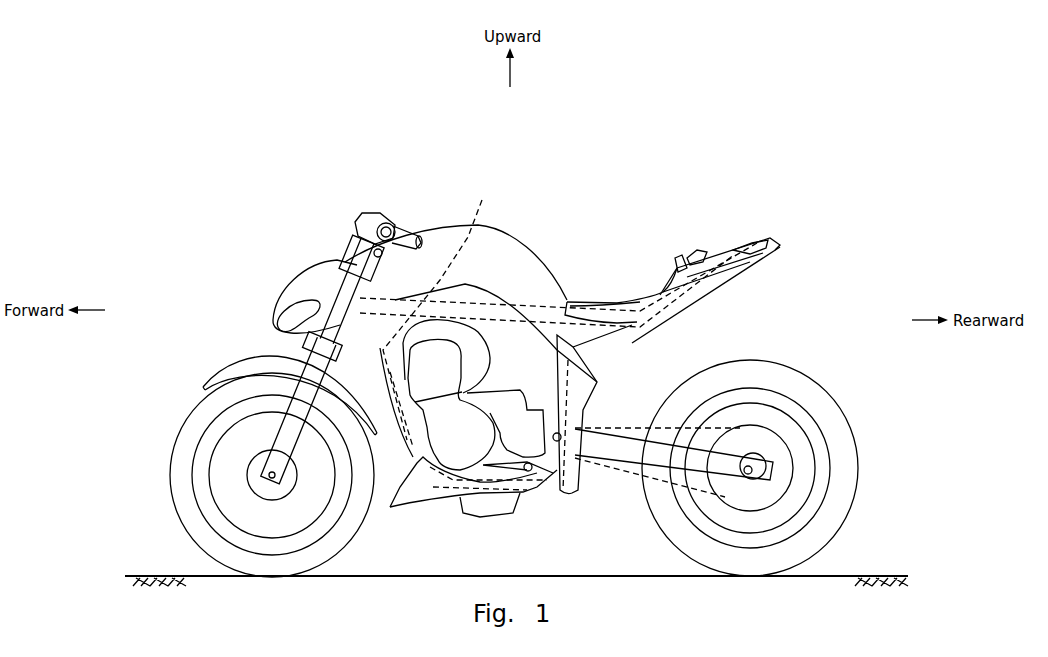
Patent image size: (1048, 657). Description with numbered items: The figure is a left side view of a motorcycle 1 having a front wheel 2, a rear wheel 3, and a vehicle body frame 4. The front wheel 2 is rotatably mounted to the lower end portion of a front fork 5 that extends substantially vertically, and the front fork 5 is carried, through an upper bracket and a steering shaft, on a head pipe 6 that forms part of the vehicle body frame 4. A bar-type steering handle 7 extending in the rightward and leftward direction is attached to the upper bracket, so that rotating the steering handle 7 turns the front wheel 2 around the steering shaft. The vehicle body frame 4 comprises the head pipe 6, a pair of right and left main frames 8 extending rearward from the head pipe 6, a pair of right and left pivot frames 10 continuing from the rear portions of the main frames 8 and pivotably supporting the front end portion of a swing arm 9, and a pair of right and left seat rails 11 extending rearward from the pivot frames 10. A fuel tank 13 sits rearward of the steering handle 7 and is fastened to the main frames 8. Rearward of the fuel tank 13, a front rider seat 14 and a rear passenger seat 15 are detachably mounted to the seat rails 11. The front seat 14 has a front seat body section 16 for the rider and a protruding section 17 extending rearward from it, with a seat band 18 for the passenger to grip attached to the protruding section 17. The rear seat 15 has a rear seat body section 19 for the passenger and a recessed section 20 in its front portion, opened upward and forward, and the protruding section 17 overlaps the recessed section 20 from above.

The motorcycle 1 is at (220, 226).
The front wheel 2 is at (192, 405).
The rear wheel 3 is at (838, 408).
The vehicle body frame 4 is at (338, 282).
The front fork 5 is at (305, 353).
The head pipe 6 is at (345, 303).
The steering handle 7 is at (413, 226).
The main frames 8 is at (558, 311).
The swing arm 9 is at (617, 447).
The pivot frames 10 is at (600, 394).
The seat rails 11 is at (706, 296).
The fuel tank 13 is at (520, 243).
The front rider seat 14 is at (652, 240).
The rear passenger seat 15 is at (757, 212).
The front seat body section 16 is at (611, 301).
The protruding section 17 is at (667, 275).
The seat band 18 is at (673, 265).
The rear seat body section 19 is at (730, 248).
The recessed section 20 is at (697, 253).